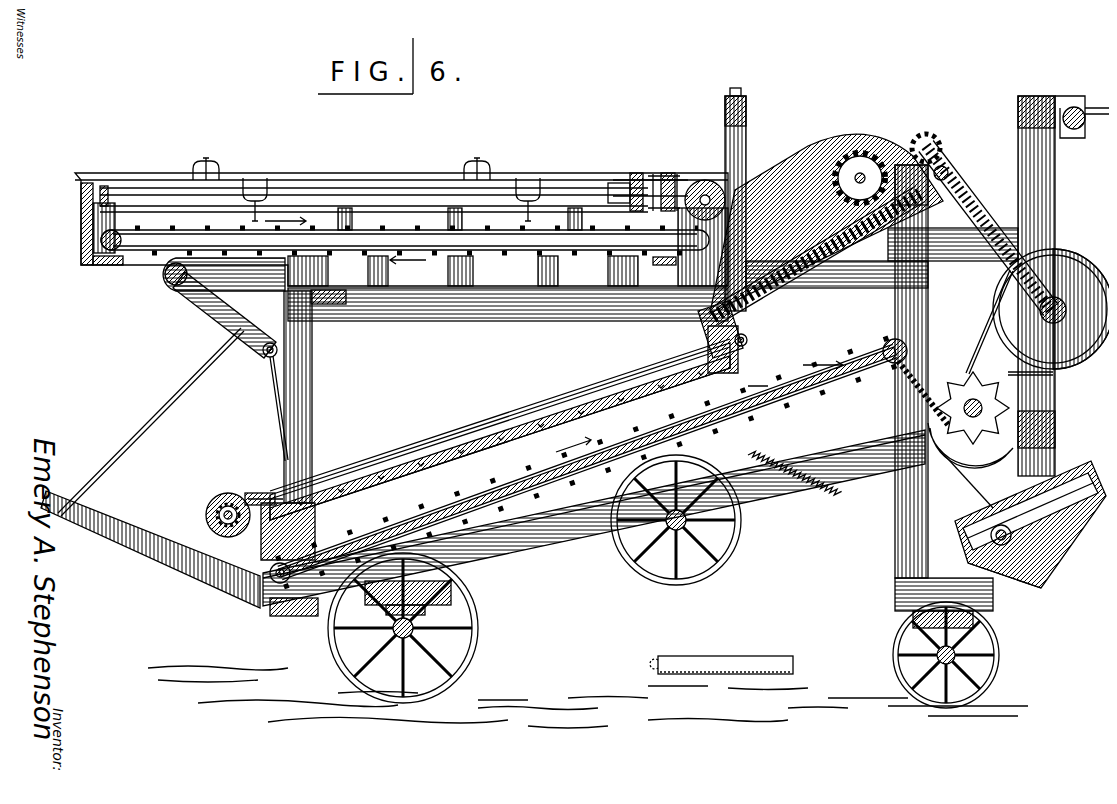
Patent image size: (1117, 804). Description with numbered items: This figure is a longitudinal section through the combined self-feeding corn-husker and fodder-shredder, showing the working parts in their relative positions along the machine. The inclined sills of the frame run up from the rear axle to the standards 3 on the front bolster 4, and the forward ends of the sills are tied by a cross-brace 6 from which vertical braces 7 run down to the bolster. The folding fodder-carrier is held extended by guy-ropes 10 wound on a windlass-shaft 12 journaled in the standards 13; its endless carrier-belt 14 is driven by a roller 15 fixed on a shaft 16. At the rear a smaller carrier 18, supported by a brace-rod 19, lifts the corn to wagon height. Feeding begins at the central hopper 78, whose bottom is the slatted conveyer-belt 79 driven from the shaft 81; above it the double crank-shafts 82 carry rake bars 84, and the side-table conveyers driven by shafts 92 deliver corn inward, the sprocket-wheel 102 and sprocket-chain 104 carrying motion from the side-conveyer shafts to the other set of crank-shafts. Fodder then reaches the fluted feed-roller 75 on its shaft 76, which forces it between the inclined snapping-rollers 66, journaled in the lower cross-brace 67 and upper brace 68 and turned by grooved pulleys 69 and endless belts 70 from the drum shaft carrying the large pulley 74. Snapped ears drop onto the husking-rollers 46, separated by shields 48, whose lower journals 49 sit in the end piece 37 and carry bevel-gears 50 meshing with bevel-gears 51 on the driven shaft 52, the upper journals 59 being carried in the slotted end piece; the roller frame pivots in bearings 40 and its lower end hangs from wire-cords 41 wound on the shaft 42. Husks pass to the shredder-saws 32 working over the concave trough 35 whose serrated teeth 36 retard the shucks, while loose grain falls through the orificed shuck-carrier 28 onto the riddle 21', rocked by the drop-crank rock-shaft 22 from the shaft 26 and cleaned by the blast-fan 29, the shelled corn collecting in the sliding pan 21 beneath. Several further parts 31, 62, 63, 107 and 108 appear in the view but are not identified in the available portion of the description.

The standard 3 is at (895, 510).
The front bolster 4 is at (975, 605).
The cross-brace 6 is at (1049, 426).
The vertical brace 7 is at (1047, 390).
The guy-rope 10 is at (1073, 100).
The windlass-shaft 12 is at (1067, 122).
The standard 13 is at (1049, 100).
The endless carrier-belt 14 is at (1085, 492).
The roller 15 is at (1042, 530).
The shaft 16 is at (1015, 560).
The carrier 18 is at (160, 555).
The brace-rod 19 is at (113, 450).
The sliding pan 21 is at (721, 652).
The riddle 21' is at (795, 482).
The drop-crank rock-shaft 22 is at (876, 455).
The shaft 26 is at (882, 360).
The shuck-carrier 28 is at (438, 497).
The blast-fan 29 is at (676, 520).
The conveyor belt 31 is at (500, 478).
The shredder-saws 32 is at (973, 408).
The concave trough 35 is at (985, 450).
The serrated teeth 36 is at (984, 413).
The lower end piece 37 is at (514, 443).
The bearings 40 is at (740, 331).
The wire-cord 41 is at (270, 415).
The shaft 42 is at (256, 344).
The husking-roller 46 is at (490, 412).
The longitudinal shield 48 is at (545, 396).
The journals 49 is at (263, 486).
The bevel-gears 50 is at (240, 485).
The bevel-gears 51 is at (215, 526).
The shaft 52 is at (200, 500).
The journals 59 is at (680, 400).
The direction of travel 62 is at (794, 375).
The hopper 63 is at (800, 215).
The snapping-roller 66 is at (785, 292).
The cross-brace 67 is at (700, 322).
The brace 68 is at (938, 190).
The grooved pulleys 69 is at (930, 146).
The endless belts 70 is at (976, 212).
The large pulley 74 is at (1060, 292).
The fluted feed-roller 75 is at (862, 158).
The shaft 76 is at (850, 162).
The central hopper 78 is at (405, 237).
The conveyer-belt 79 is at (476, 238).
The shaft 81 is at (662, 269).
The double crank-shaft 82 is at (318, 178).
The parallel bars 84 is at (200, 152).
The shaft 92 is at (118, 182).
The sprocket-wheel 102 is at (648, 178).
The sprocket-chain 104 is at (666, 170).
The bearing plate 107 is at (628, 168).
The rod 108 is at (978, 330).